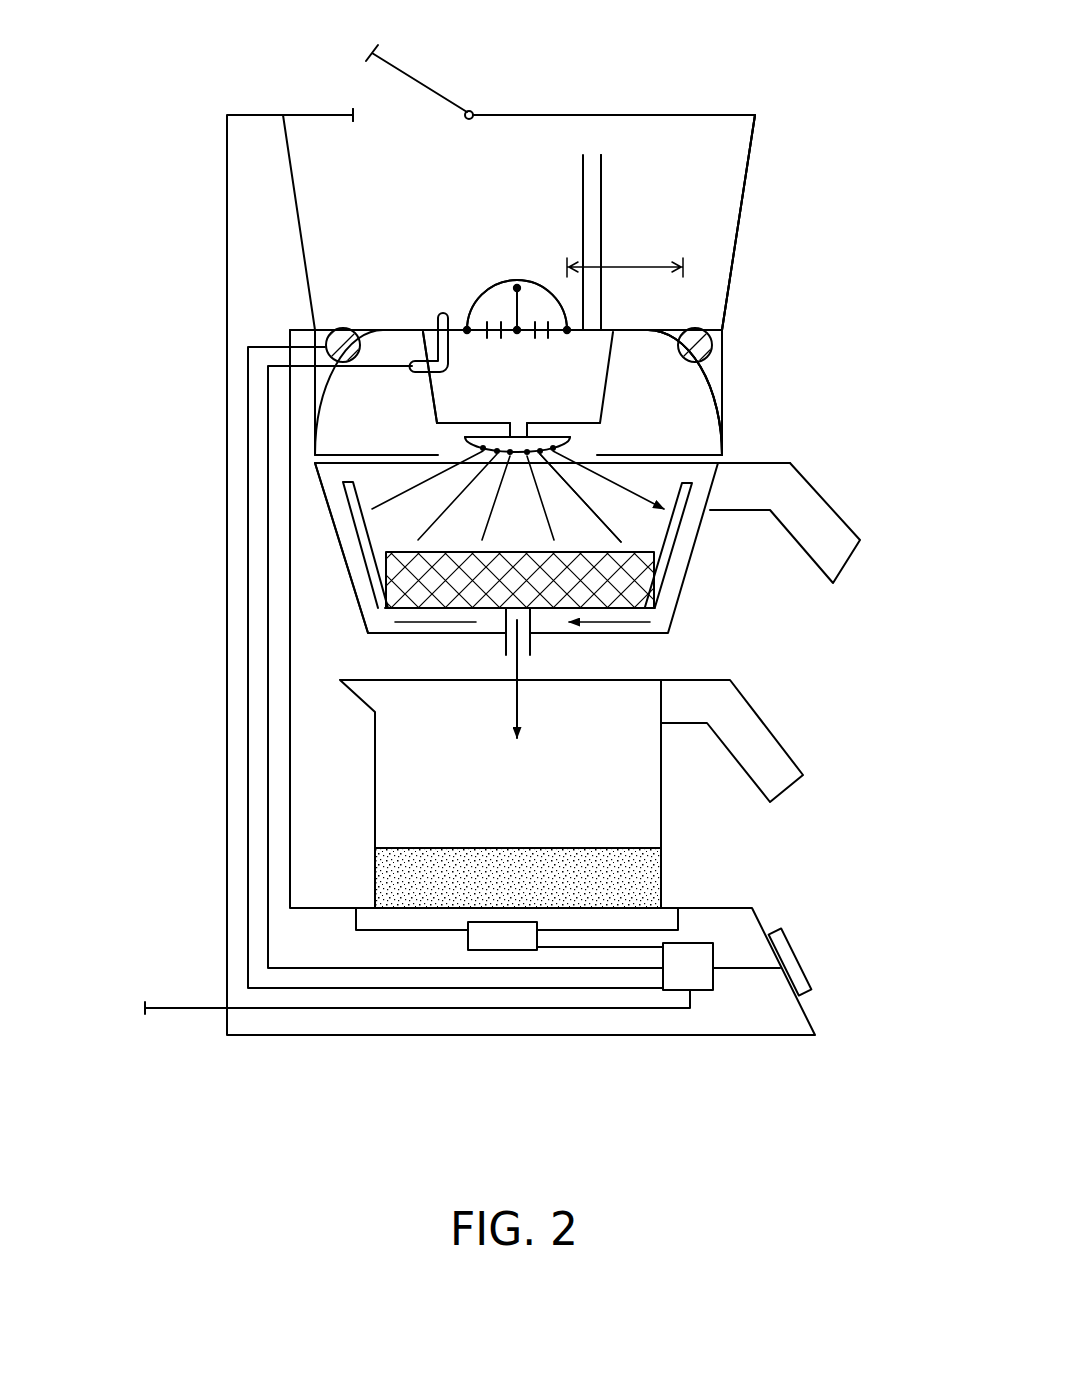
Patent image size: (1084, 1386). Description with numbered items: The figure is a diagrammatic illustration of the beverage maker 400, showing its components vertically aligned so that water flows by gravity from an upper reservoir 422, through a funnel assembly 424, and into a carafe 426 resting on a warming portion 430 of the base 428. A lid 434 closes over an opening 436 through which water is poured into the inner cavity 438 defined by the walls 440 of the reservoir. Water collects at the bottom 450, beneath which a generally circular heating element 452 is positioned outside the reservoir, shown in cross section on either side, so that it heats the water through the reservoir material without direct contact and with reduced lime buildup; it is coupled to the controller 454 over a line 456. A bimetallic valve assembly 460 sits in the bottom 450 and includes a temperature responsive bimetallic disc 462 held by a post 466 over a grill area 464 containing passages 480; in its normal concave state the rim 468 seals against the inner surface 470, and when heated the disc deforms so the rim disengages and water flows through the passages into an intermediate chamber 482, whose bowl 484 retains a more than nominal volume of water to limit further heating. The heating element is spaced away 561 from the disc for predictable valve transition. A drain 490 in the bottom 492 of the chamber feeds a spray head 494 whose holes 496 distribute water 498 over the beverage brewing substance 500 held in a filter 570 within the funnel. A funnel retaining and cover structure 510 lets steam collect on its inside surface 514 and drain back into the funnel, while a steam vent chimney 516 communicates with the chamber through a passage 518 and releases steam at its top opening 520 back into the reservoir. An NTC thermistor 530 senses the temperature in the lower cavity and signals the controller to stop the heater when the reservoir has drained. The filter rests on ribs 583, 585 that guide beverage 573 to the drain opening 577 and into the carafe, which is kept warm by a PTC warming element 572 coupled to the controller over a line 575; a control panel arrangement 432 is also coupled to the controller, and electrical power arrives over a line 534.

The beverage maker 400 is at (138, 128).
The upper reservoir 422 is at (790, 230).
The funnel assembly 424 is at (798, 599).
The carafe 426 is at (603, 785).
The base 428 is at (822, 1014).
The warming portion 430 is at (686, 900).
The control panel arrangement 432 is at (268, 376).
The lid 434 is at (421, 82).
The opening 436 is at (385, 122).
The inner cavity 438 is at (355, 177).
The walls 440 is at (732, 265).
The bottom 450 is at (682, 320).
The heating element 452 is at (712, 345).
The controller 454 is at (728, 997).
The line 456 is at (250, 345).
The bimetallic valve assembly 460 is at (528, 268).
The bimetallic disc 462 is at (490, 313).
The grill area 464 is at (535, 352).
The post 466 is at (514, 311).
The rim 468 is at (567, 327).
The inner surface 470 is at (367, 328).
The passages 480 is at (488, 334).
The intermediate chamber 482 is at (617, 409).
The bowl 484 is at (458, 386).
The drain 490 is at (518, 425).
The bottom 492 is at (460, 418).
The spray head 494 is at (460, 441).
The holes 496 is at (512, 478).
The water 498 is at (613, 470).
The beverage brewing substance 500 is at (628, 587).
The funnel retaining and cover structure 510 is at (732, 430).
The inside surface 514 is at (712, 412).
The steam vent chimney 516 is at (602, 242).
The passage 518 is at (590, 334).
The top opening 520 is at (592, 150).
The NTC thermistor 530 is at (440, 318).
The line 534 is at (178, 1012).
The spacing 561 is at (643, 260).
The filter 570 is at (665, 540).
The warming element 572 is at (503, 938).
The beverage 573 is at (520, 667).
The line 575 is at (613, 947).
The drain opening 577 is at (506, 642).
The rib 583 is at (700, 495).
The rib 585 is at (380, 624).